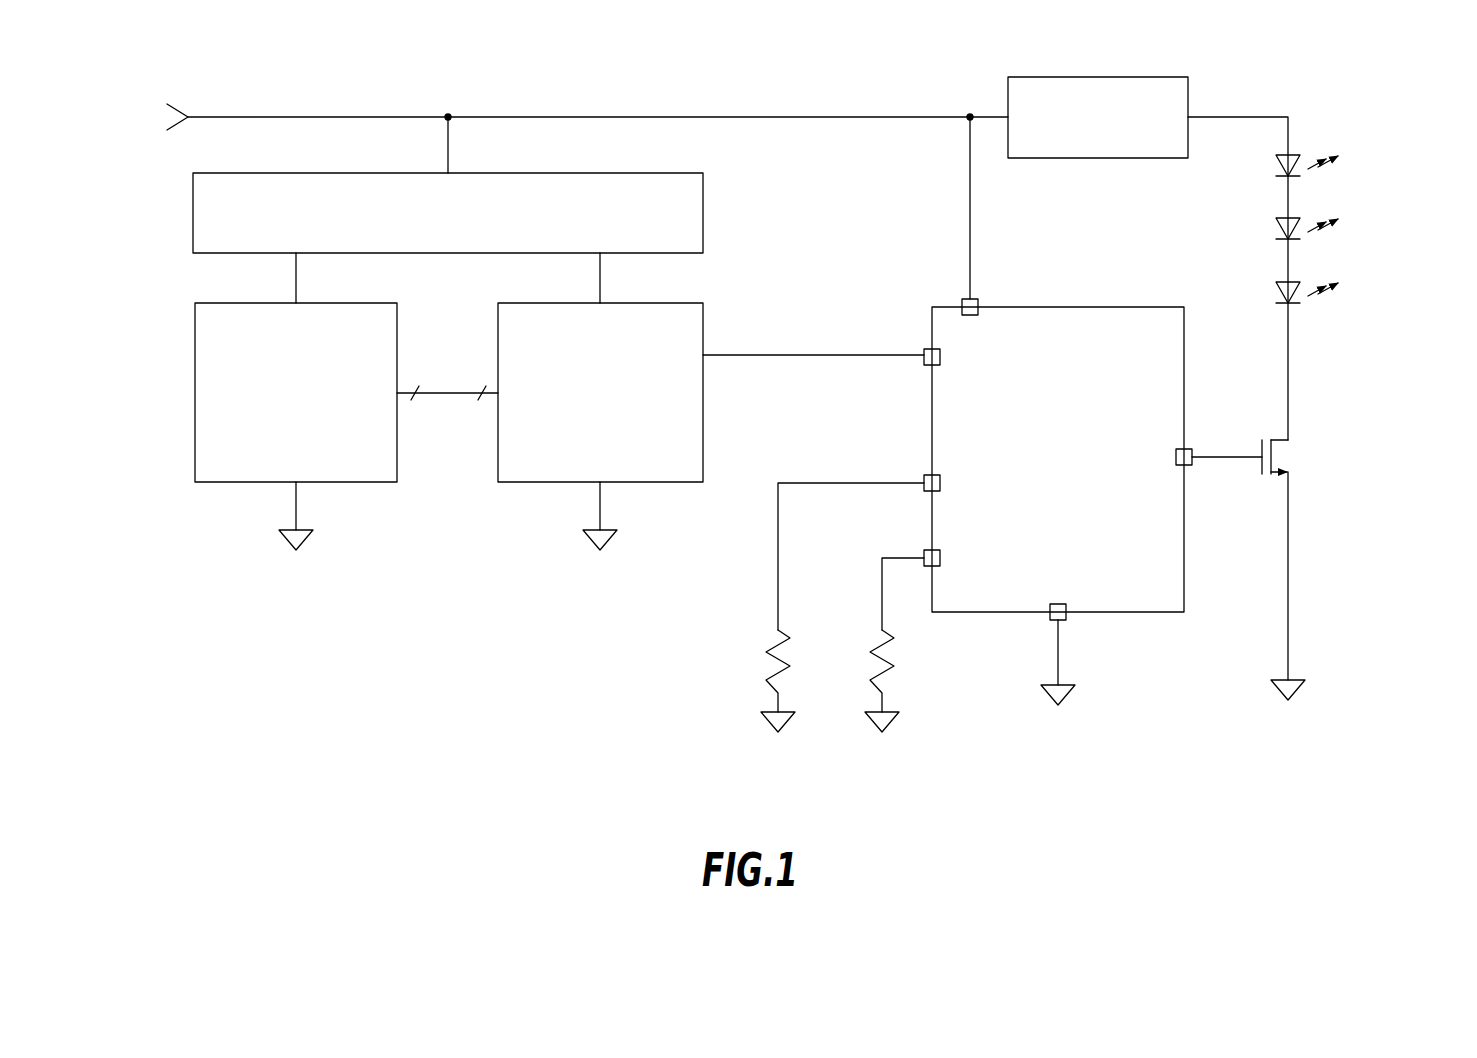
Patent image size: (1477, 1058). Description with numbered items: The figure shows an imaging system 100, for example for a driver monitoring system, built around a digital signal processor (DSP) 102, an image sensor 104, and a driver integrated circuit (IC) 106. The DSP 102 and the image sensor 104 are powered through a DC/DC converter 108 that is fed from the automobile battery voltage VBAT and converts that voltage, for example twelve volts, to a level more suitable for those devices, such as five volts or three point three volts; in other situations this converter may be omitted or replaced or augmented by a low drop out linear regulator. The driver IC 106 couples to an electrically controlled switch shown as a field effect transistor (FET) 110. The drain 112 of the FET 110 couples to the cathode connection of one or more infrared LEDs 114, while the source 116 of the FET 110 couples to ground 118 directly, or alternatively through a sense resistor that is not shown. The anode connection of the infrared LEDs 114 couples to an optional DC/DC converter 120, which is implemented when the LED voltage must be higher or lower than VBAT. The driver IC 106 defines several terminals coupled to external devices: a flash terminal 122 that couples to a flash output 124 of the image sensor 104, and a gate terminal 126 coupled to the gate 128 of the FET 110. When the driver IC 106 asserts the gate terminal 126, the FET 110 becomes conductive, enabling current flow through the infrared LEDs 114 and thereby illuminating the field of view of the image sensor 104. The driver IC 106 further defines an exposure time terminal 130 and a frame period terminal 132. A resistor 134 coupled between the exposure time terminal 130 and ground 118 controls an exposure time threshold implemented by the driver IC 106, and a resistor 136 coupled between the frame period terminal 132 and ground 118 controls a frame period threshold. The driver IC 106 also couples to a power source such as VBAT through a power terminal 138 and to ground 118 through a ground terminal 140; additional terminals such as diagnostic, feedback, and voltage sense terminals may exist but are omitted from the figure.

The imaging system 100 is at (224, 52).
The digital signal processor 102 is at (274, 422).
The image sensor 104 is at (578, 433).
The driver integrated circuit 106 is at (1036, 513).
The DC/DC converter 108 is at (428, 242).
The field effect transistor 110 is at (1310, 530).
The drain 112 is at (1292, 422).
The infrared LEDs 114 is at (1355, 221).
The source 116 is at (1292, 512).
The ground 118 is at (786, 735).
The DC/DC converter 120 is at (1050, 158).
The flash terminal 122 is at (926, 350).
The flash output 124 is at (706, 355).
The gate terminal 126 is at (1190, 450).
The gate 128 is at (1205, 462).
The exposure time terminal 130 is at (926, 477).
The frame period terminal 132 is at (926, 551).
The resistor 134 is at (752, 666).
The resistor 136 is at (860, 658).
The power terminal 138 is at (975, 298).
The ground terminal 140 is at (1050, 620).